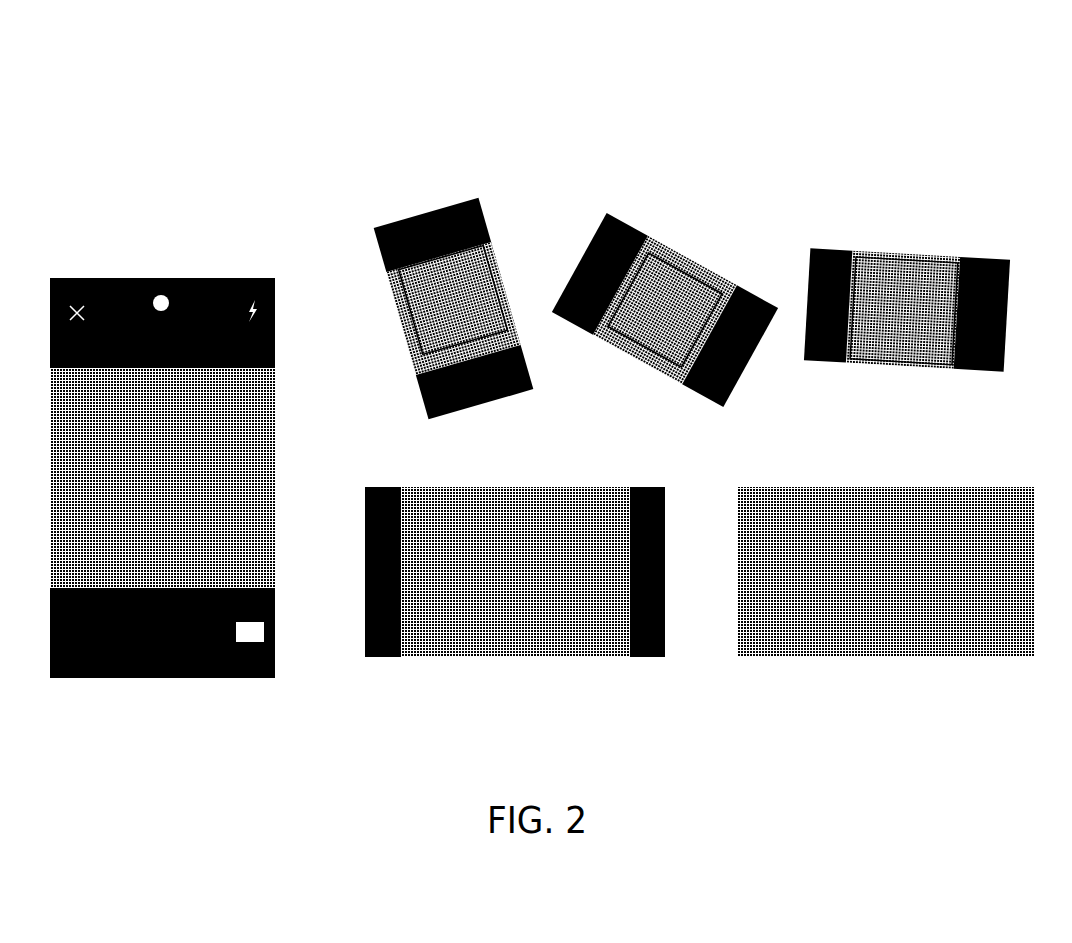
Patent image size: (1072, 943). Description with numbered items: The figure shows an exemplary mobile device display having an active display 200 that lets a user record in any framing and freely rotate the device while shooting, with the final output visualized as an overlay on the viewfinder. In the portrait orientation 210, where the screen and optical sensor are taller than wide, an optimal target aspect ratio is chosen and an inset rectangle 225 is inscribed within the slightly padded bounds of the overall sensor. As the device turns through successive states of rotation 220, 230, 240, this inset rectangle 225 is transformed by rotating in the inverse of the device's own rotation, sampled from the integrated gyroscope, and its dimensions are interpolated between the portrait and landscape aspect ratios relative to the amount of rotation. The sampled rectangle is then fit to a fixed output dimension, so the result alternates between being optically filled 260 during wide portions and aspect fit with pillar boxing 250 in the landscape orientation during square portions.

The active display 200 is at (542, 357).
The portrait orientation 210 is at (162, 413).
The rotation 220 is at (481, 284).
The inset rectangle 225 is at (498, 262).
The rotation 230 is at (665, 303).
The rotation 240 is at (909, 286).
The landscape orientation with pillar boxing 250 is at (515, 600).
The optically filled output 260 is at (886, 595).